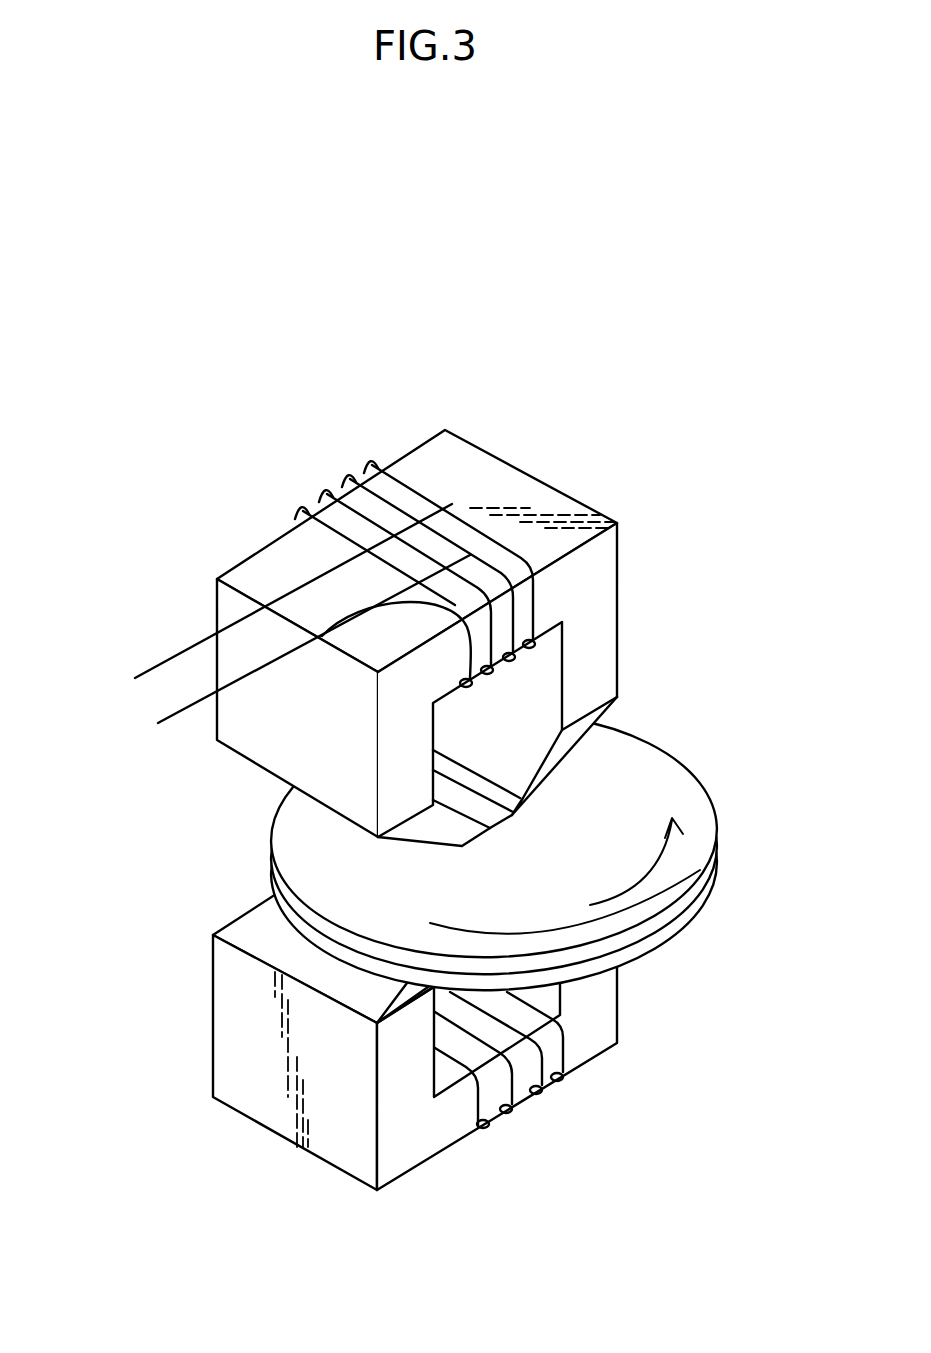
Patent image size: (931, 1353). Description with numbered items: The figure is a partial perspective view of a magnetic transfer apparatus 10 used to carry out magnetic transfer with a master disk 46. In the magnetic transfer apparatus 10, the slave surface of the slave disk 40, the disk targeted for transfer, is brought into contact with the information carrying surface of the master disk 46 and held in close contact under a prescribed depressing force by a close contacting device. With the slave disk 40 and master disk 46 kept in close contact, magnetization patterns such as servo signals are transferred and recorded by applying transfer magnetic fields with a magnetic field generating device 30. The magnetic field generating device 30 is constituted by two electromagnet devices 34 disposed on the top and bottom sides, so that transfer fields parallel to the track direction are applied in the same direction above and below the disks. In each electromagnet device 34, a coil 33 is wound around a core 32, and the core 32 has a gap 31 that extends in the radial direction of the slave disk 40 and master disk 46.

The magnetic transfer apparatus 10 is at (92, 461).
The magnetic field generating device 30 is at (277, 515).
The gap 31 is at (500, 822).
The core 32 is at (570, 748).
The coil 33 is at (370, 467).
The electromagnet device 34 is at (225, 978).
The slave disk 40 is at (687, 880).
The master disk 46 is at (677, 938).